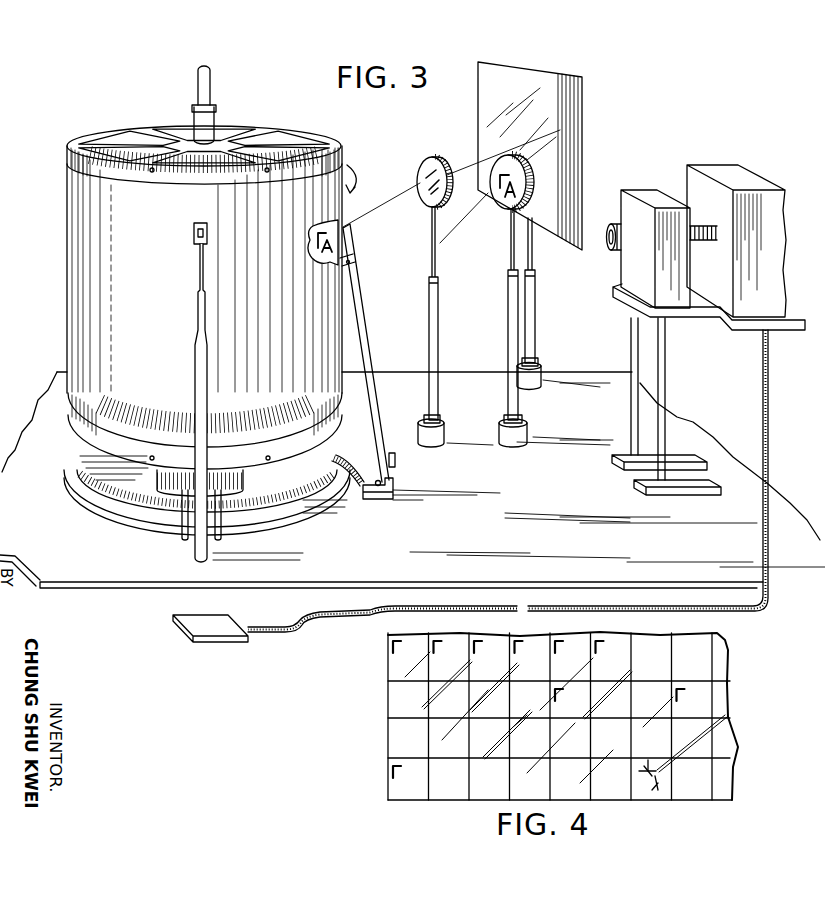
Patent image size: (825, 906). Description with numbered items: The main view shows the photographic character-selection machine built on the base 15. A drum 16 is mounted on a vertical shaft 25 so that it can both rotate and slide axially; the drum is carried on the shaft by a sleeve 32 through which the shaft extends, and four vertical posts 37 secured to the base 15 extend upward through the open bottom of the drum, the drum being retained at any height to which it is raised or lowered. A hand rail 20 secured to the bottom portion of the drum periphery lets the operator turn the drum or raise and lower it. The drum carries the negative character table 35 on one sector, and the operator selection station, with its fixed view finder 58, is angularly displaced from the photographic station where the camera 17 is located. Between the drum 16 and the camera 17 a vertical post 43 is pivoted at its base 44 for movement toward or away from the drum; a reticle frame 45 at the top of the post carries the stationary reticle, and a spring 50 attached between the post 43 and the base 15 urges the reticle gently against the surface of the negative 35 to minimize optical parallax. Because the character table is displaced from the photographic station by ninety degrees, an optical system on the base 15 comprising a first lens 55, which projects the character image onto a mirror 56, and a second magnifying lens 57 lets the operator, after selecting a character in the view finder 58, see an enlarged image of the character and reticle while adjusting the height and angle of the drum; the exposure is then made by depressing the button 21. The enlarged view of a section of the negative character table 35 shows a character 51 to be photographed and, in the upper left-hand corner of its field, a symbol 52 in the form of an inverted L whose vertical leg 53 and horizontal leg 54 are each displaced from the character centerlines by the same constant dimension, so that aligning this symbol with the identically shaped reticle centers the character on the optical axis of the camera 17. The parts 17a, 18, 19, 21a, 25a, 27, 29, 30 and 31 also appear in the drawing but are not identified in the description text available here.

In FIG. 3, the base 15 is at (108, 578).
In FIG. 3, the drum 16 is at (179, 314).
In FIG. 3, the camera 17 is at (642, 192).
In FIG. 3, the adjusting screw 17a is at (703, 247).
In FIG. 3, the projector block 18 is at (738, 167).
In FIG. 3, the support platform 19 is at (709, 323).
In FIG. 3, the hand rail 20 is at (88, 500).
In FIG. 3, the button 21 is at (227, 645).
In FIG. 3, the cable 21a is at (768, 412).
In FIG. 3, the vertical shaft 25 is at (211, 88).
In FIG. 3, the central shaft 25a is at (236, 487).
In FIG. 3, the lower band 27 is at (69, 427).
In FIG. 3, the upper rim band 29 is at (67, 162).
In FIG. 3, the openings 30 is at (157, 132).
In FIG. 3, the top plate 31 is at (236, 130).
In FIG. 3, the sleeve 32 is at (216, 118).
In FIG. 4, the negative character table 35 is at (726, 740).
In FIG. 3, the vertical posts 37 is at (200, 520).
In FIG. 3, the vertical post 43 is at (360, 318).
In FIG. 3, the base of post 44 is at (394, 490).
In FIG. 3, the reticle frame 45 is at (344, 231).
In FIG. 3, the spring 50 is at (346, 490).
In FIG. 4, the character 51 is at (667, 786).
In FIG. 4, the symbol 52 is at (633, 760).
In FIG. 4, the vertical leg 53 is at (639, 774).
In FIG. 4, the horizontal leg 54 is at (649, 761).
In FIG. 3, the first lens 55 is at (443, 158).
In FIG. 3, the mirror 56 is at (581, 98).
In FIG. 3, the second magnifying lens 57 is at (528, 190).
In FIG. 3, the fixed view finder 58 is at (195, 240).